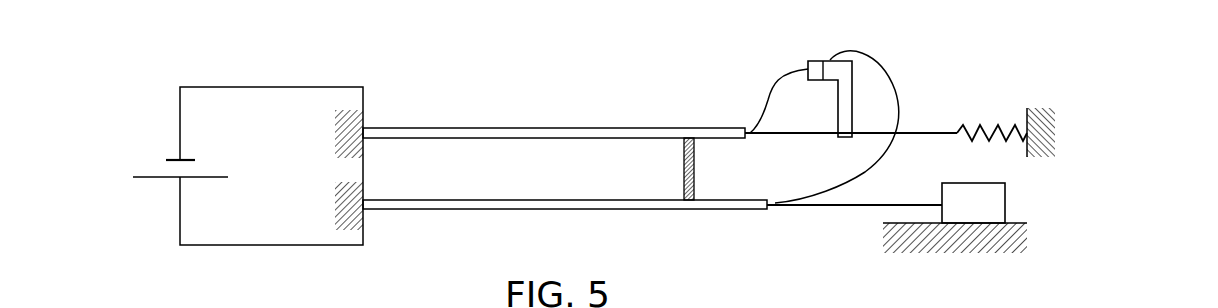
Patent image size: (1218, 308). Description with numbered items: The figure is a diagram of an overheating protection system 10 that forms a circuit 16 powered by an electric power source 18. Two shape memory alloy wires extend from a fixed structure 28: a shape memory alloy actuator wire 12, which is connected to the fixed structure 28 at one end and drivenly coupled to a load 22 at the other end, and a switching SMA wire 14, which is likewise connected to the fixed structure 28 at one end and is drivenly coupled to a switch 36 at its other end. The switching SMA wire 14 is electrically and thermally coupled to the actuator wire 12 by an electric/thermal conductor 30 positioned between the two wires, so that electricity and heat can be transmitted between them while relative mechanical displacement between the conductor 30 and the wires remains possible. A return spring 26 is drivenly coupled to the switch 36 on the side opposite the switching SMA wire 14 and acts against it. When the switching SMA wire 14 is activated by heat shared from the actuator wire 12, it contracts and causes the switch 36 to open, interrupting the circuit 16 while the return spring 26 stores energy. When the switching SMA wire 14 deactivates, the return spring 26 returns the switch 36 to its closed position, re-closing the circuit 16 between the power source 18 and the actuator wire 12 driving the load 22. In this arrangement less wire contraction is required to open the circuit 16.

The overheating protection system 10 is at (1089, 66).
The shape memory alloy actuator wire 12 is at (713, 209).
The switching SMA wire 14 is at (560, 128).
The circuit 16 is at (297, 87).
The electric power source 18 is at (154, 177).
The load 22 is at (919, 218).
The return spring 26 is at (985, 127).
The fixed structure 28 is at (335, 196).
The electric/thermal conductor 30 is at (684, 170).
The switch 36 is at (875, 67).